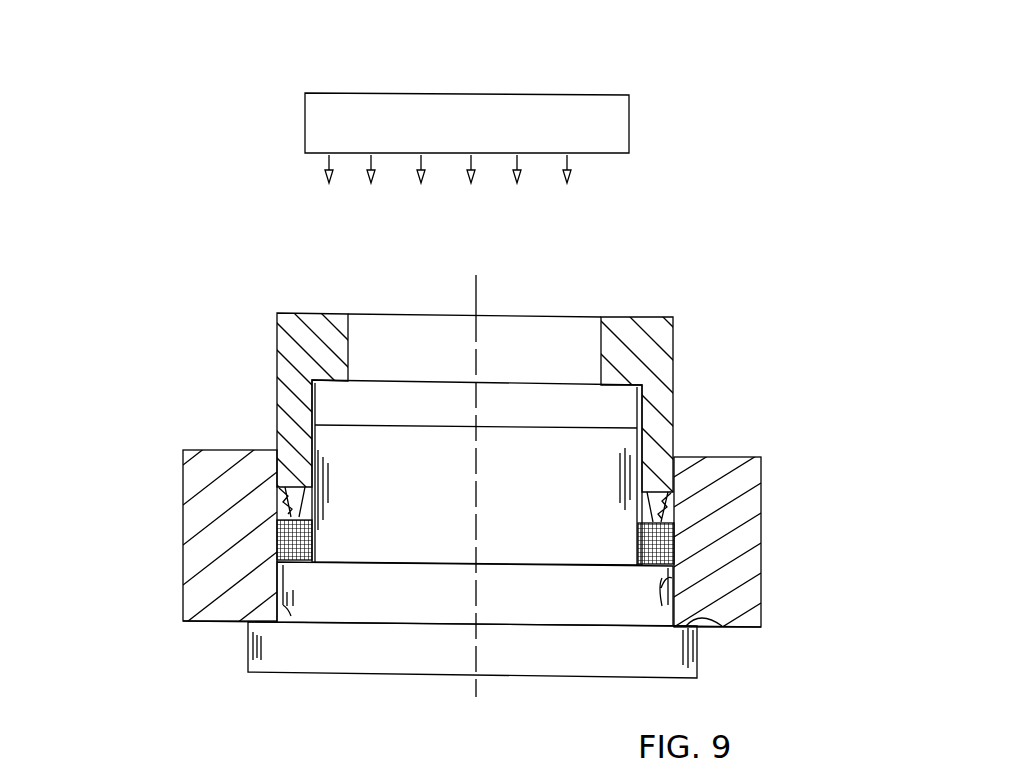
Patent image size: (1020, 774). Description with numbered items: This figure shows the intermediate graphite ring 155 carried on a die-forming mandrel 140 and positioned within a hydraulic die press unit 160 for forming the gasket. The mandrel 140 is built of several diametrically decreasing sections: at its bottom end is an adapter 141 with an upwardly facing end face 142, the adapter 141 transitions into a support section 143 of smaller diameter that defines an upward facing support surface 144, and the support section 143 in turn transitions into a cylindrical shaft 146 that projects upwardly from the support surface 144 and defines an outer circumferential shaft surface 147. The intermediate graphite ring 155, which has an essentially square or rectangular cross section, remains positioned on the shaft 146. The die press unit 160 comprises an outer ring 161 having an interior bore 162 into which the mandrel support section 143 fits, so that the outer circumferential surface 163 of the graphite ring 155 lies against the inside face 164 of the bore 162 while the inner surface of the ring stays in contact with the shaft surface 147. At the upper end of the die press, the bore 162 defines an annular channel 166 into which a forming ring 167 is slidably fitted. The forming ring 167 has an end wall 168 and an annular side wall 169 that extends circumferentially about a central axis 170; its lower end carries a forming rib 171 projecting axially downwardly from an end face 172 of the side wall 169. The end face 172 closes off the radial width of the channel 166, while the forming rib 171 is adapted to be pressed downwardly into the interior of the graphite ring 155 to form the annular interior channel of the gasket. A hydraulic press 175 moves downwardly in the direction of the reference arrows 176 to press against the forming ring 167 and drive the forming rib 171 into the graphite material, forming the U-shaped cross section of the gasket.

The die-forming mandrel 140 is at (247, 673).
The adapter 141 is at (407, 658).
The end face 142 is at (688, 622).
The support section 143 is at (557, 605).
The support surface 144 is at (374, 548).
The cylindrical shaft 146 is at (559, 414).
The outer circumferential shaft surface 147 is at (598, 447).
The intermediate graphite ring 155 is at (677, 545).
The hydraulic die press unit 160 is at (181, 290).
The outer ring 161 is at (200, 460).
The interior bore 162 is at (662, 586).
The outer circumferential surface 163 is at (278, 540).
The inside face 164 is at (283, 605).
The annular channel 166 is at (676, 439).
The forming ring 167 is at (311, 311).
The end wall 168 is at (633, 318).
The annular side wall 169 is at (665, 392).
The central axis 170 is at (476, 350).
The forming rib 171 is at (283, 502).
The end face 172 is at (283, 493).
The hydraulic press 175 is at (536, 110).
The reference arrows 176 is at (570, 163).